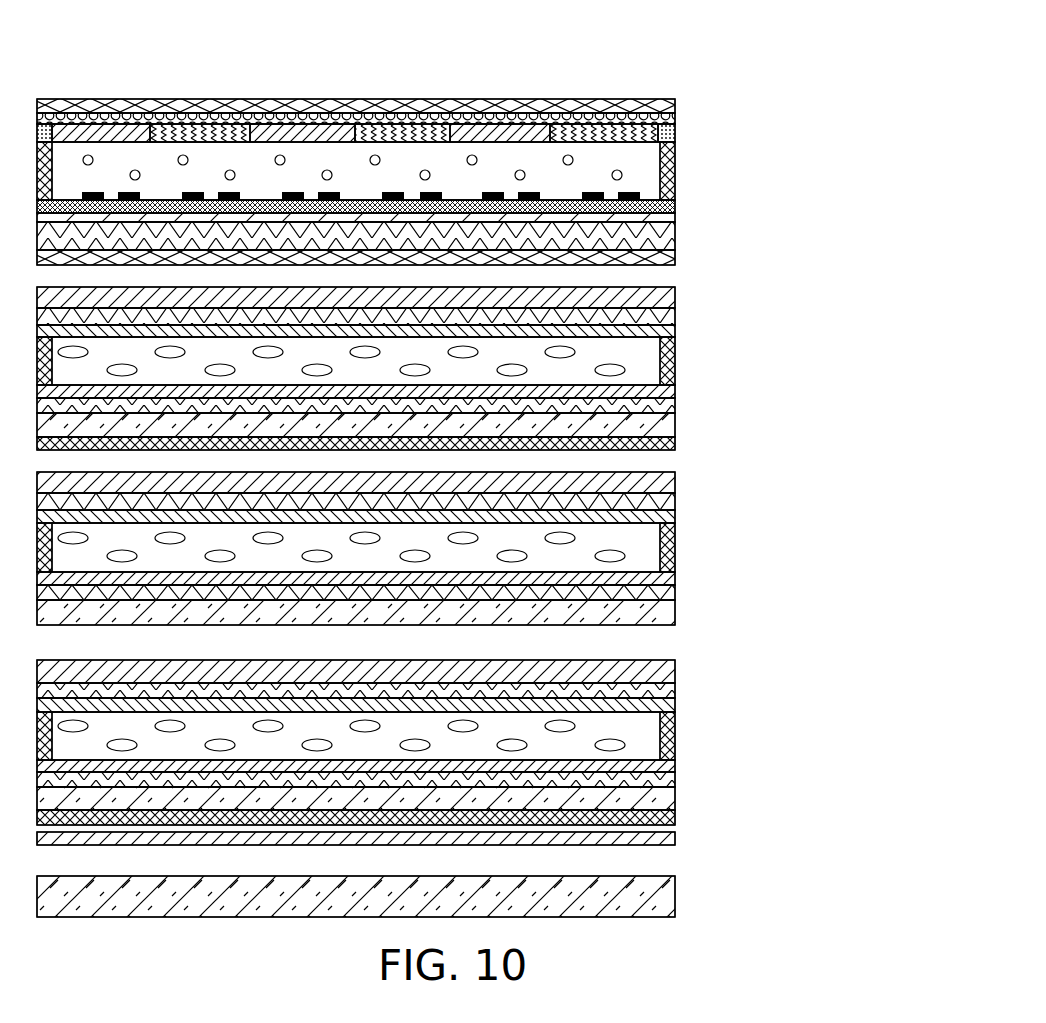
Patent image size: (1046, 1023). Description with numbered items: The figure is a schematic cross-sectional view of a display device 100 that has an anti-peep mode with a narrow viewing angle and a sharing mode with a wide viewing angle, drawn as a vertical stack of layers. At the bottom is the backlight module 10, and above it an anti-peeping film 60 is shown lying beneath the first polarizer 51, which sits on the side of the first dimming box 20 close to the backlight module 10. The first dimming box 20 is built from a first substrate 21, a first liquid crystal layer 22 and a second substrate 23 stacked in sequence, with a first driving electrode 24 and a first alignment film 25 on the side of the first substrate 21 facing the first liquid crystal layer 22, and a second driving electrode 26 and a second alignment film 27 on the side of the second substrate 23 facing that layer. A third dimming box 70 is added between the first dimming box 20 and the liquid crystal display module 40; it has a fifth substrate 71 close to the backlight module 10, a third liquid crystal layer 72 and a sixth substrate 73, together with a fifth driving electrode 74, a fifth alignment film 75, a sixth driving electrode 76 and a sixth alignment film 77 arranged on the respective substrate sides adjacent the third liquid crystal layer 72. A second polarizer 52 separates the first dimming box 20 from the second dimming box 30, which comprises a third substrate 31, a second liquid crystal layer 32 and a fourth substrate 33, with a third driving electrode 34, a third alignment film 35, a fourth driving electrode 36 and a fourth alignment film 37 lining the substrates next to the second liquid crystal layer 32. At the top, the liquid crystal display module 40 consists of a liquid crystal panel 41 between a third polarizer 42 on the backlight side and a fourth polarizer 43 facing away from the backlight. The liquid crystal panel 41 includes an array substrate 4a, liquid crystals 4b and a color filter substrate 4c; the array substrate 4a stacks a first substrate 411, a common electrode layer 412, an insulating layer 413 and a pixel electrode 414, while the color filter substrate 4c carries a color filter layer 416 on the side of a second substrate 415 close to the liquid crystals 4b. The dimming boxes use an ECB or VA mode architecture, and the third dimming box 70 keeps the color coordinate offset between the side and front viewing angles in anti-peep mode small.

The display device 100 is at (795, 52).
The backlight module 10 is at (675, 898).
The first dimming box 20 is at (411, 731).
The first substrate 21 is at (382, 797).
The first liquid crystal layer 22 is at (620, 745).
The second substrate 23 is at (675, 671).
The first driving electrode 24 is at (675, 780).
The first alignment film 25 is at (675, 765).
The second driving electrode 26 is at (675, 690).
The second alignment film 27 is at (675, 705).
The second dimming box 30 is at (411, 359).
The third substrate 31 is at (382, 425).
The second liquid crystal layer 32 is at (620, 370).
The fourth substrate 33 is at (675, 297).
The third driving electrode 34 is at (675, 405).
The third alignment film 35 is at (675, 392).
The fourth driving electrode 36 is at (675, 315).
The fourth alignment film 37 is at (675, 331).
The liquid crystal display module 40 is at (815, 105).
The liquid crystal panel 41 is at (441, 175).
The third polarizer 42 is at (675, 258).
The fourth polarizer 43 is at (675, 100).
The array substrate 4a is at (417, 207).
The liquid crystals 4b is at (622, 176).
The color filter substrate 4c is at (416, 124).
The first substrate 411 is at (675, 236).
The common electrode layer 412 is at (675, 217).
The insulating layer 413 is at (675, 206).
The pixel electrode 414 is at (642, 195).
The second substrate 415 is at (675, 118).
The color filter layer 416 is at (675, 133).
The first polarizer 51 is at (675, 817).
The second polarizer 52 is at (675, 444).
The anti-peeping film 60 is at (675, 838).
The third dimming box 70 is at (411, 545).
The fifth substrate 71 is at (382, 612).
The third liquid crystal layer 72 is at (620, 556).
The sixth substrate 73 is at (675, 482).
The fifth driving electrode 74 is at (675, 592).
The fifth alignment film 75 is at (675, 578).
The sixth driving electrode 76 is at (675, 501).
The sixth alignment film 77 is at (675, 516).